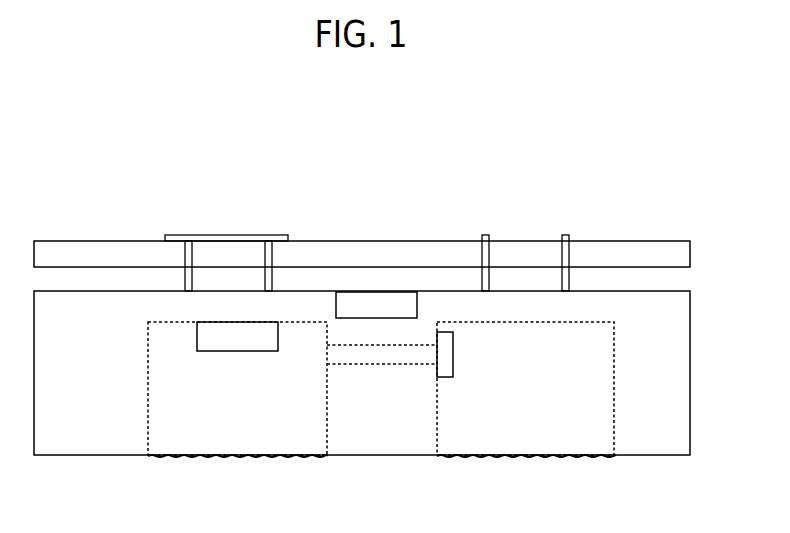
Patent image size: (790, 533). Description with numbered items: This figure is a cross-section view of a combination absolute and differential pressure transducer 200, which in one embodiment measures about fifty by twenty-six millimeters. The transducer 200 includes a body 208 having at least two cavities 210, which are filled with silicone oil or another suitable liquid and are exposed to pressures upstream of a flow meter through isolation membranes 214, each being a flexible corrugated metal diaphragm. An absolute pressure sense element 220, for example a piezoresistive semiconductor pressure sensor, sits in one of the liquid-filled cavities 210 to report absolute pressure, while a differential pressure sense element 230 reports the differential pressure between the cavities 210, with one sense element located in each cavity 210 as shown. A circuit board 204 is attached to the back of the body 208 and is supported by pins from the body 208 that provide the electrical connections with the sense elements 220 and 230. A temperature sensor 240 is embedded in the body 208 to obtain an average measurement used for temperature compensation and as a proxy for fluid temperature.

The combination absolute and differential pressure transducer 200 is at (119, 154).
The circuit board 204 is at (360, 260).
The body 208 is at (360, 420).
The cavities 210 is at (215, 400).
The isolation membrane 214 is at (258, 460).
The absolute pressure sense element 220 is at (220, 346).
The differential pressure sense element 230 is at (444, 352).
The temperature sensor 240 is at (358, 314).